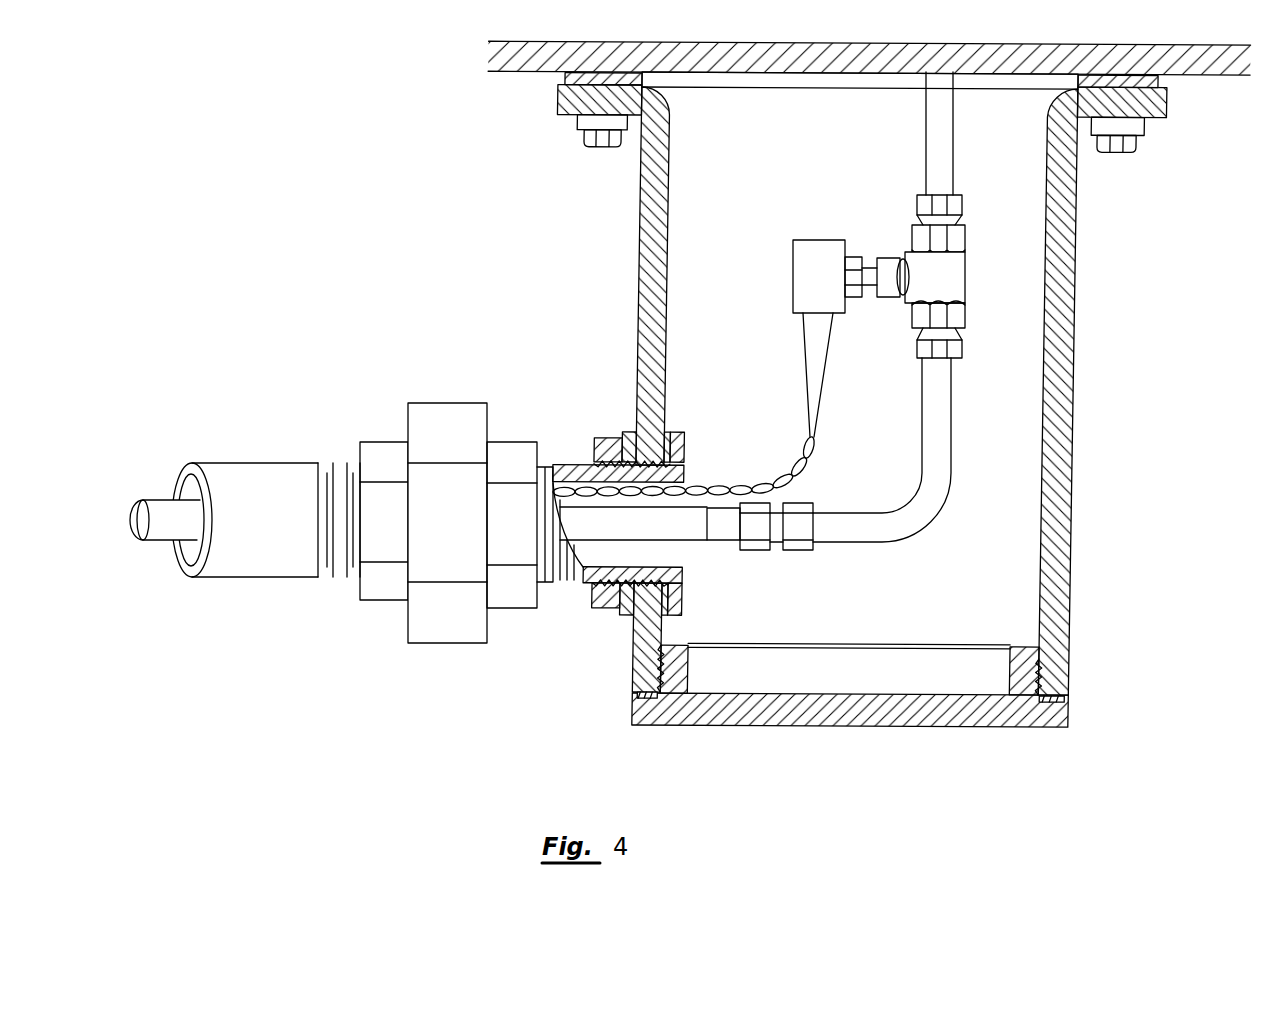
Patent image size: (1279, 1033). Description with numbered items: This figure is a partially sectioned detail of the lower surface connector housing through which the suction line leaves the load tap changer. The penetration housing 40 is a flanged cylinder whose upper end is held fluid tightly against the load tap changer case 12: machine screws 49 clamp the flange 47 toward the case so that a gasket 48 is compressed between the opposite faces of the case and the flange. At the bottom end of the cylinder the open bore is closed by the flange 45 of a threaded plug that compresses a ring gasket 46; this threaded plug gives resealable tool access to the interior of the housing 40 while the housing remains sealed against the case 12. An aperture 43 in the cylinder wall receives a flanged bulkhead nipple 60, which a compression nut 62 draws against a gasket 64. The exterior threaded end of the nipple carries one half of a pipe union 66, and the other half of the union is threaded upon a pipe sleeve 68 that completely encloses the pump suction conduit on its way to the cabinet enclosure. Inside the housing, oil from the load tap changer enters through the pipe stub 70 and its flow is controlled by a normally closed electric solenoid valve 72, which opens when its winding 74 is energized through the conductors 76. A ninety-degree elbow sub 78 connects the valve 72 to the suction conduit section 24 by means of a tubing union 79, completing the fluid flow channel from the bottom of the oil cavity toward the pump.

The load tap changer case 12 is at (879, 34).
The conduit section 24 is at (145, 530).
The penetration housing 40 is at (1072, 470).
The aperture 43 is at (655, 570).
The flange 45 is at (633, 713).
The ring gasket 46 is at (634, 695).
The flange 47 is at (558, 102).
The gasket 48 is at (565, 79).
The machine screws 49 is at (600, 150).
The flanged bulkhead nipple 60 is at (683, 470).
The compression nut 62 is at (600, 438).
The gasket 64 is at (672, 432).
The pipe union 66 is at (433, 403).
The pipe sleeve 68 is at (279, 526).
The pipe stub 70 is at (925, 130).
The electric solenoid valve 72 is at (957, 287).
The winding 74 is at (840, 285).
The conductors 76 is at (810, 373).
The 90° elbow sub 78 is at (935, 505).
The tubing union 79 is at (776, 551).